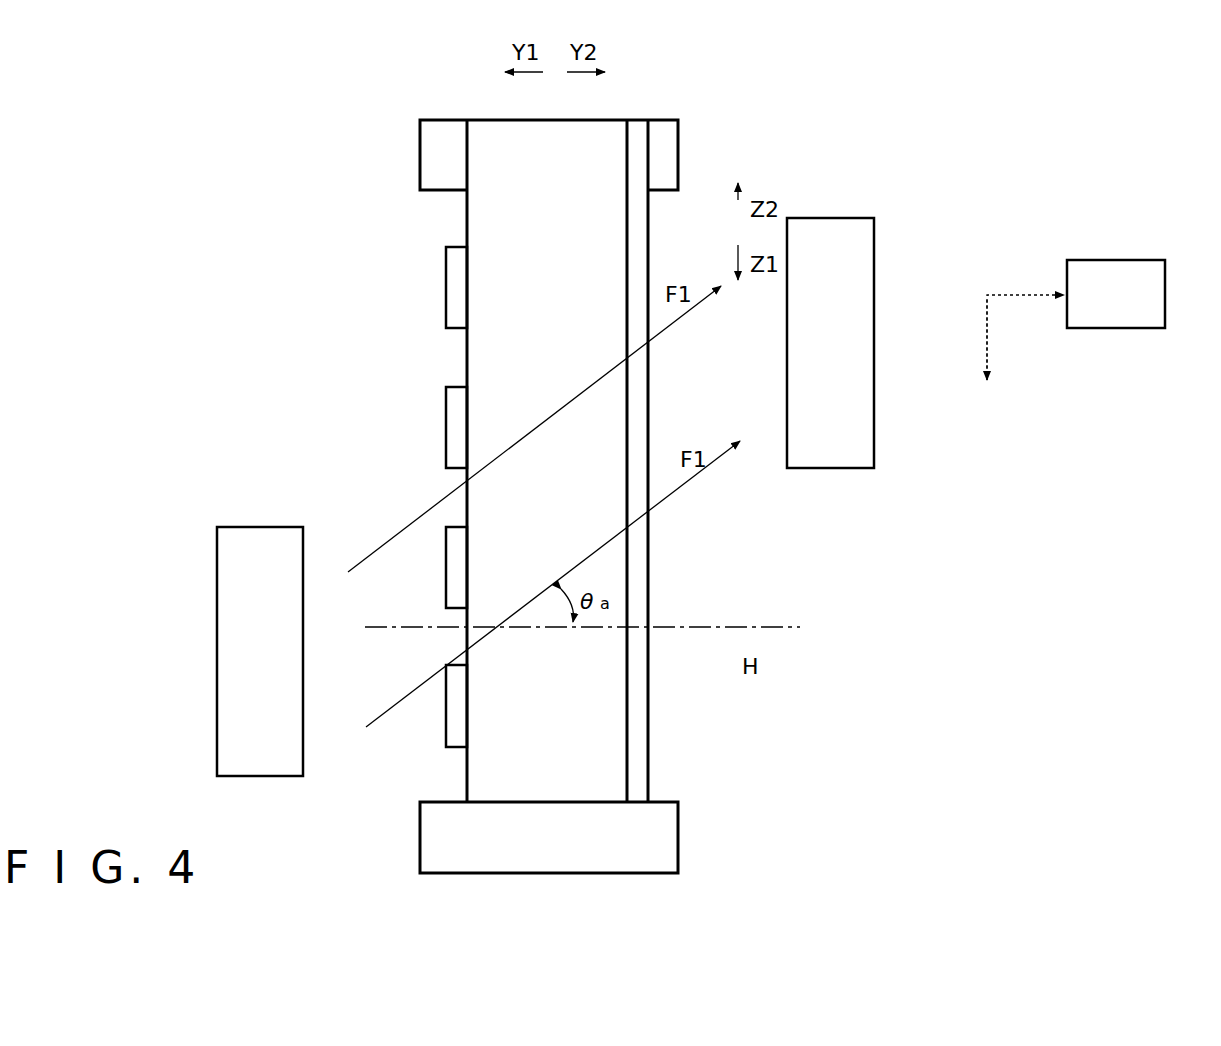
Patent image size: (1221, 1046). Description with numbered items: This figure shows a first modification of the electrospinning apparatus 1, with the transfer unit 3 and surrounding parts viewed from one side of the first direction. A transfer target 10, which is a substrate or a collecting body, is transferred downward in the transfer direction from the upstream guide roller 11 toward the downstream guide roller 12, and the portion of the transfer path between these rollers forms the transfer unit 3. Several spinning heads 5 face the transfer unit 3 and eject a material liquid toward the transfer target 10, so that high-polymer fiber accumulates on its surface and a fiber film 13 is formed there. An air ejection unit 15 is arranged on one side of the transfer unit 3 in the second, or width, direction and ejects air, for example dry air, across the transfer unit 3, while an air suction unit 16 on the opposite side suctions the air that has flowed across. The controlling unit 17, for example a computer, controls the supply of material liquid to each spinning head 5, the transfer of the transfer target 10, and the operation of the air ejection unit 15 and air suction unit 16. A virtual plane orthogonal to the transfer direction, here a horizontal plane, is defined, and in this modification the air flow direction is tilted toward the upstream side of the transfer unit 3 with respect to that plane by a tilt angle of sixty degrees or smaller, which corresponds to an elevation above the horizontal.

The electrospinning apparatus 1 is at (850, 89).
The transfer unit 3 is at (663, 230).
The spinning heads 5 is at (435, 318).
The transfer target 10 is at (651, 772).
The guide roller 11 is at (680, 152).
The guide roller 12 is at (665, 846).
The fiber film 13 is at (469, 782).
The air ejection unit 15 is at (259, 527).
The air suction unit 16 is at (829, 217).
The controlling unit 17 is at (1137, 260).